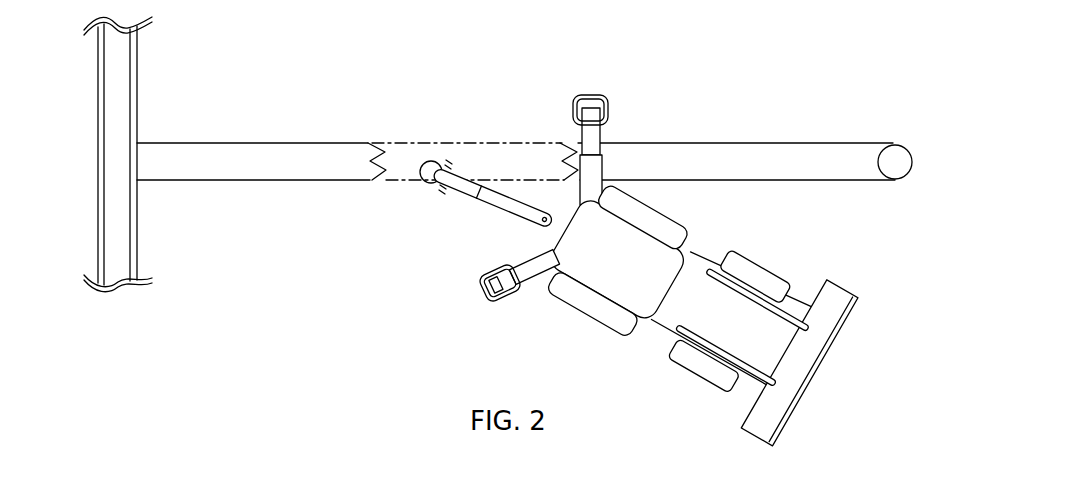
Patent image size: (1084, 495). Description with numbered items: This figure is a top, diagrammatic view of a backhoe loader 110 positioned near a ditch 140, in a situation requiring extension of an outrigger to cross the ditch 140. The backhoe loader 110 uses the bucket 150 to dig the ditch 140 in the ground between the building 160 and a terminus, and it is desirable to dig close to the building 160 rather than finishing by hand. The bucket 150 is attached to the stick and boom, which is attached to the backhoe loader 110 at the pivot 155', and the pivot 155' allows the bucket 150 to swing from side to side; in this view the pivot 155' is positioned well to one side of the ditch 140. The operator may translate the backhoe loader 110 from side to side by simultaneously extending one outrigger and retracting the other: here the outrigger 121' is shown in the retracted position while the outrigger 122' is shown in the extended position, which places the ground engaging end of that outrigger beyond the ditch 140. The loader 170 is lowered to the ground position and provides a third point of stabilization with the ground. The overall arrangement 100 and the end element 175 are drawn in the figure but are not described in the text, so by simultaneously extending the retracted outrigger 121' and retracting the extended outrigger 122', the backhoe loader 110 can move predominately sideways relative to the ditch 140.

The bed-mounted chair system 100 is at (308, 93).
The backhoe loader 110 is at (674, 291).
The outrigger 121' is at (520, 307).
The outrigger 122' is at (638, 150).
The ditch 140 is at (516, 161).
The bucket 150 is at (423, 143).
The pivot 155' is at (483, 209).
The building 160 is at (144, 235).
The loader 170 is at (822, 363).
The end stop 175 is at (889, 136).